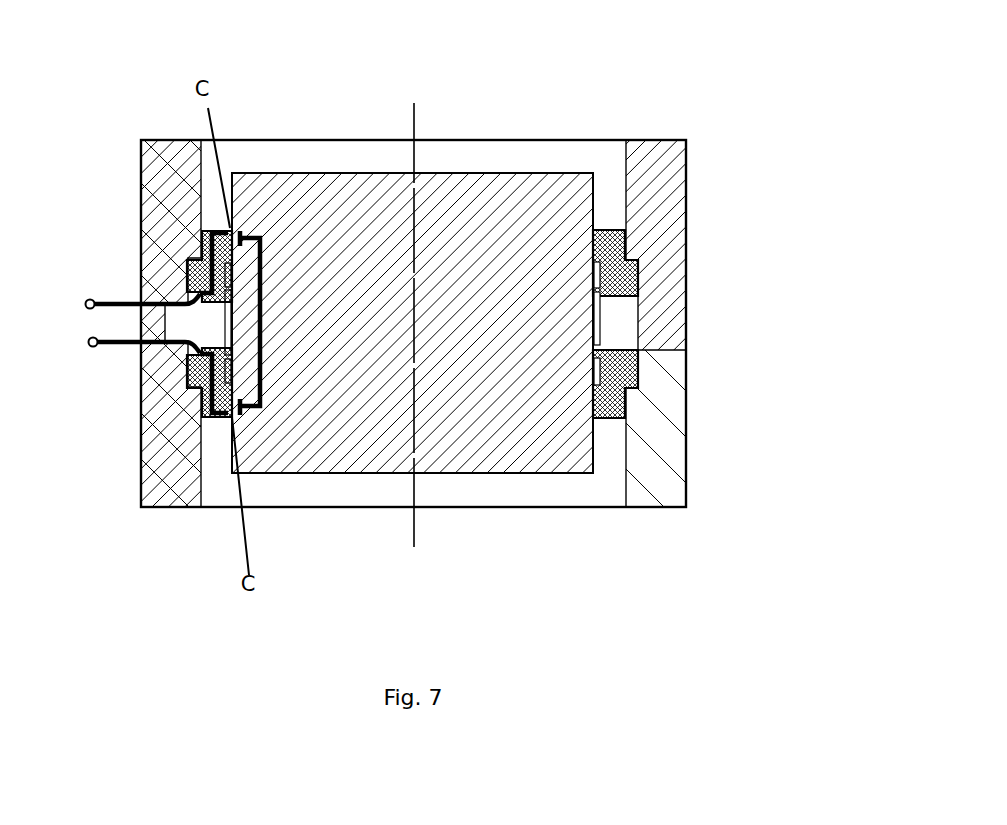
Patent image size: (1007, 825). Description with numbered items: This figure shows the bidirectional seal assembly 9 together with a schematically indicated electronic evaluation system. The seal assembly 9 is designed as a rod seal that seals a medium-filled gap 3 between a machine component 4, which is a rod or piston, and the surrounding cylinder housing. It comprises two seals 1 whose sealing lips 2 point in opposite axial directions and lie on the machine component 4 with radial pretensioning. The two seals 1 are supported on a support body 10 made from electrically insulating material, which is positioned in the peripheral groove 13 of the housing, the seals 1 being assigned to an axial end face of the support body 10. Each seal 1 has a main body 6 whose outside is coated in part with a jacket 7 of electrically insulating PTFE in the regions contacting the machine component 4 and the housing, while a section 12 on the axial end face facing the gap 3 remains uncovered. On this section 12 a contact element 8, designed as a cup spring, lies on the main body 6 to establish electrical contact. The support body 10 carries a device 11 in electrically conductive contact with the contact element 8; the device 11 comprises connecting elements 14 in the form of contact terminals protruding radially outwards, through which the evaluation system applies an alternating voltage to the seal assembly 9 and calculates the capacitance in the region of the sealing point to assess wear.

The seal 1 is at (618, 258).
The sealing lip 2 is at (630, 225).
The gap 3 is at (542, 153).
The machine component 4 is at (447, 427).
The main body 6 is at (615, 277).
The jacket 7 is at (217, 230).
The contact element 8 is at (610, 288).
The seal assembly 9 is at (141, 507).
The support body 10 is at (605, 323).
The device 11 is at (88, 347).
The section 12 is at (192, 290).
The peripheral groove 13 is at (213, 265).
The connecting elements 14 is at (175, 298).